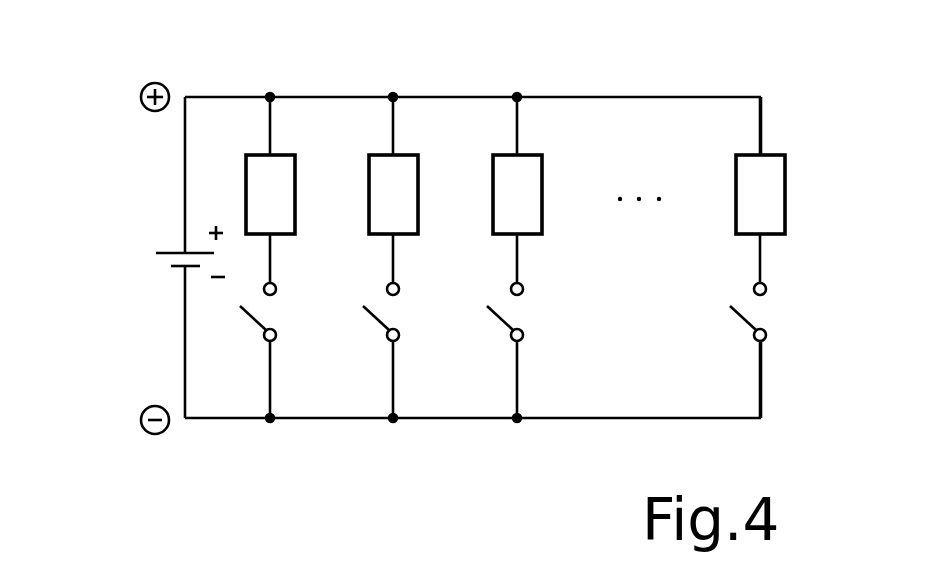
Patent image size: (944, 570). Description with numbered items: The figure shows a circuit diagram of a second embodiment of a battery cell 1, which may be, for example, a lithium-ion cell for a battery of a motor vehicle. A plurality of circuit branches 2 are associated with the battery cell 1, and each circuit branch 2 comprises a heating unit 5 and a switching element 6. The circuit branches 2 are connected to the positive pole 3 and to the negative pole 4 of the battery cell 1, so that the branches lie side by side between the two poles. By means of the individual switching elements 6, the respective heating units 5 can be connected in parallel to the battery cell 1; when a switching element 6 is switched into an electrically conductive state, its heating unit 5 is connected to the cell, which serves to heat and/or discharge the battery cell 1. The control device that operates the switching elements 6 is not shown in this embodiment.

The battery cell 1 is at (122, 276).
The circuit branch 2 is at (295, 328).
The positive pole 3 is at (144, 63).
The negative pole 4 is at (139, 450).
The heating unit 5 is at (262, 210).
The switching element 6 is at (254, 363).